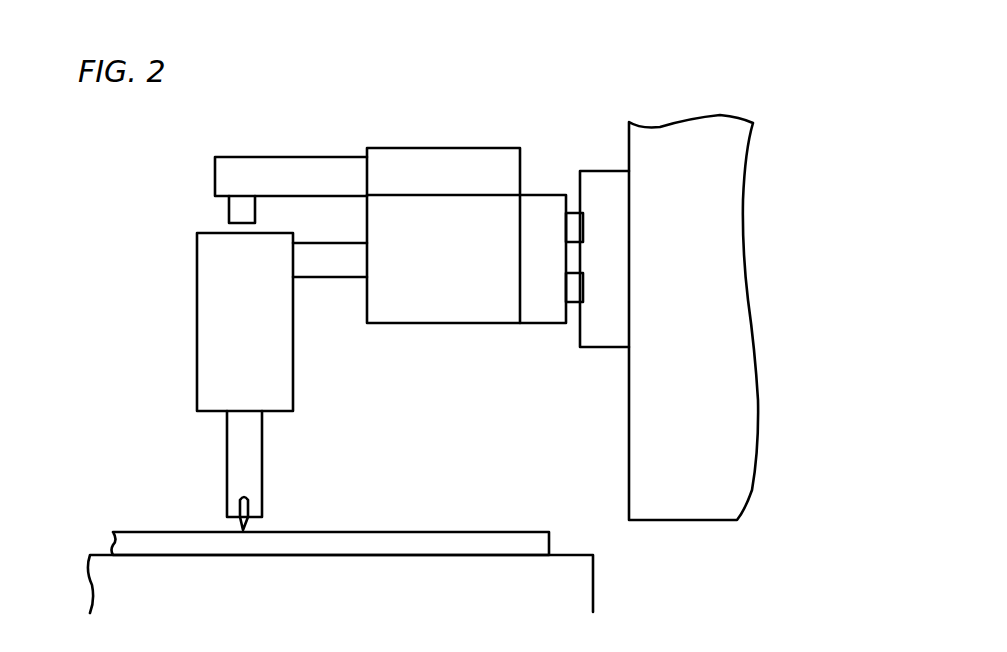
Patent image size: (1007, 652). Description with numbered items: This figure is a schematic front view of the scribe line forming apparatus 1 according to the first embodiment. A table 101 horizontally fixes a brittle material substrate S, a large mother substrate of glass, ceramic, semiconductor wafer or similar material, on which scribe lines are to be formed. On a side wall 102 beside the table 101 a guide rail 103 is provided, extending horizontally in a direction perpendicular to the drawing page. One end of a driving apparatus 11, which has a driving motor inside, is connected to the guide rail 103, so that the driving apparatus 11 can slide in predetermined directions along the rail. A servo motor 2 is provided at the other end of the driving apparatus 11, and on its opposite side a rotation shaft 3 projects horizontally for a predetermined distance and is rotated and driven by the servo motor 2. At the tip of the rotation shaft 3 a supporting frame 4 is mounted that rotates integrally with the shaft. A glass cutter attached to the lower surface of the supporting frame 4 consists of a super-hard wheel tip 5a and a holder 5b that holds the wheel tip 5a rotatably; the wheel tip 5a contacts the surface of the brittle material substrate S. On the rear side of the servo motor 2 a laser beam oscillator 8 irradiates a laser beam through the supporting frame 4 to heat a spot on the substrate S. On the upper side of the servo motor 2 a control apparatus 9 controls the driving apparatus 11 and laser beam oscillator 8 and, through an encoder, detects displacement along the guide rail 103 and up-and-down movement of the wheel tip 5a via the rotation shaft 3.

The scribe line forming apparatus 1 is at (350, 87).
The servo motor 2 is at (476, 308).
The rotation shaft 3 is at (330, 265).
The supporting frame 4 is at (210, 316).
The wheel tip 5a is at (247, 524).
The holder 5b is at (255, 453).
The laser beam oscillator 8 is at (299, 170).
The control apparatus 9 is at (445, 168).
The driving apparatus 11 is at (540, 207).
The table 101 is at (573, 593).
The side wall 102 is at (718, 208).
The guide rail 103 is at (600, 185).
The brittle material substrate S is at (117, 543).